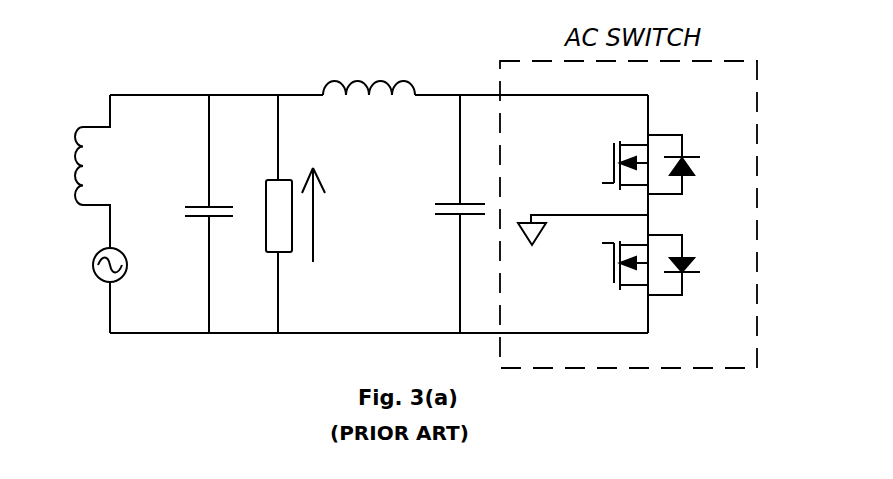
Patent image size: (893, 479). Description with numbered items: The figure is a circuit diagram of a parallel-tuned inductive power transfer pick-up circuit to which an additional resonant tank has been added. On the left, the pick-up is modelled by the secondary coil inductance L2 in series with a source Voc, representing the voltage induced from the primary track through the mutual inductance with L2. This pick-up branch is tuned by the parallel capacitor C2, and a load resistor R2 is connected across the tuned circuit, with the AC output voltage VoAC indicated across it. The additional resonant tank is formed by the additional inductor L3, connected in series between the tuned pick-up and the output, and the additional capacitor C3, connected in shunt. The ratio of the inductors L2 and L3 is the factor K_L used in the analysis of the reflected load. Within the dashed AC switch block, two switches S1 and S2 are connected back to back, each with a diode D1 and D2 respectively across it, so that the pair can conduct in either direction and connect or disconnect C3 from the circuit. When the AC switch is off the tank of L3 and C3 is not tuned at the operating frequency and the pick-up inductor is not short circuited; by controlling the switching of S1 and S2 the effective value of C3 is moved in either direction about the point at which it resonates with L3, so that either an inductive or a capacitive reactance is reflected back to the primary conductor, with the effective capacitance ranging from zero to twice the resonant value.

The secondary coil inductance L2 is at (73, 171).
The open-circuit voltage source Voc is at (84, 290).
The capacitor C2 is at (196, 214).
The resistor R2 is at (264, 214).
The AC output voltage Vo,AC VoAC is at (340, 215).
The additional inductor L3 is at (369, 70).
The additional capacitor C3 is at (447, 214).
The switch S1 (MOSFET) S1 is at (604, 157).
The diode D1 is at (696, 164).
The switch S2 (MOSFET) S2 is at (604, 274).
The diode D2 is at (696, 265).